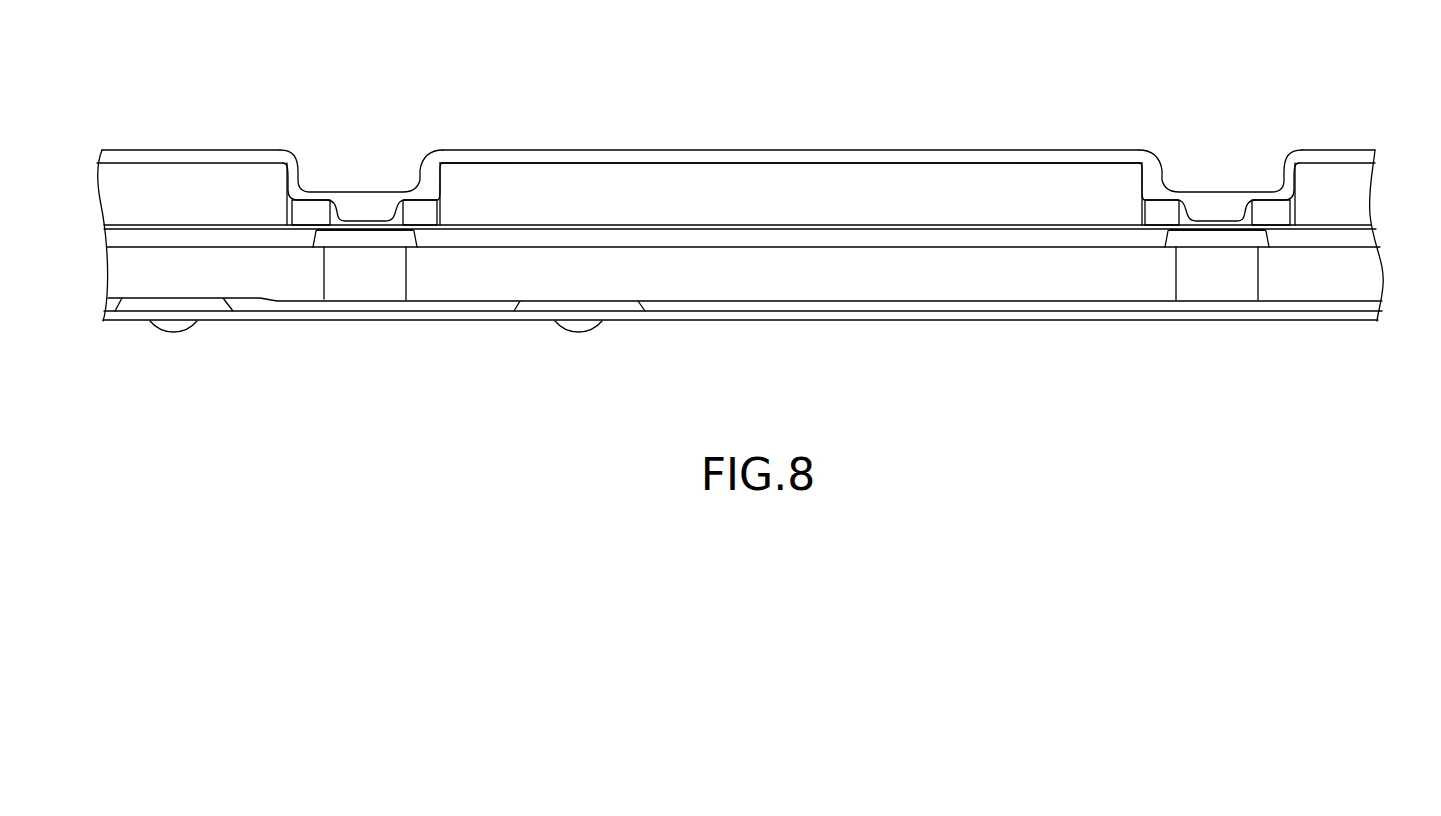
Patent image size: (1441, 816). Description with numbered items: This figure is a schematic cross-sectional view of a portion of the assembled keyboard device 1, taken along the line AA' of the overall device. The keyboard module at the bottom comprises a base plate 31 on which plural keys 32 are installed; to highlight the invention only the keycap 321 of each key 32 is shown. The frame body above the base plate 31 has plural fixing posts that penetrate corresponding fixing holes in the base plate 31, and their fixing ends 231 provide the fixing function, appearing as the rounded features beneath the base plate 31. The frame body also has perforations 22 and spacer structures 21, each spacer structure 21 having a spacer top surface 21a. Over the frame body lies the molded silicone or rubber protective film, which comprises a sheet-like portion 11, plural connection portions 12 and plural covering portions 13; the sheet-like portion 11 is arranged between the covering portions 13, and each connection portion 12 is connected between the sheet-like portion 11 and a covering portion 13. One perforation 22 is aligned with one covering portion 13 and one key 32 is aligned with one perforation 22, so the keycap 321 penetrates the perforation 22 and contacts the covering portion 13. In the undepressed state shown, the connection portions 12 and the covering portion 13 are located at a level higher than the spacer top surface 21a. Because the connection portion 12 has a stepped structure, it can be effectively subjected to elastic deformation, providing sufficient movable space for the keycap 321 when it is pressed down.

The keyboard device 1 is at (495, 64).
The sheet-like portion 11 is at (363, 222).
The connection portion 12 is at (430, 172).
The covering portion 13 is at (670, 156).
The spacer structure 21 is at (363, 292).
The spacer top surface 21a is at (387, 230).
The perforation 22 is at (1127, 275).
The base plate 31 is at (865, 312).
The key 32 is at (791, 167).
The keycap 321 is at (918, 182).
The fixing end 231 is at (173, 328).